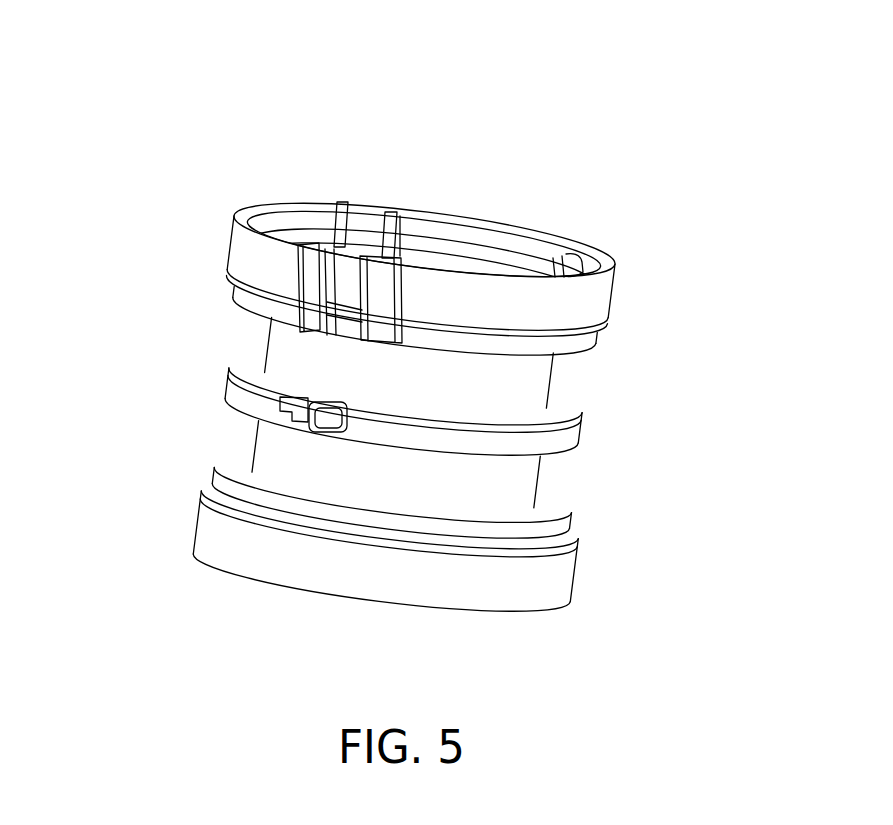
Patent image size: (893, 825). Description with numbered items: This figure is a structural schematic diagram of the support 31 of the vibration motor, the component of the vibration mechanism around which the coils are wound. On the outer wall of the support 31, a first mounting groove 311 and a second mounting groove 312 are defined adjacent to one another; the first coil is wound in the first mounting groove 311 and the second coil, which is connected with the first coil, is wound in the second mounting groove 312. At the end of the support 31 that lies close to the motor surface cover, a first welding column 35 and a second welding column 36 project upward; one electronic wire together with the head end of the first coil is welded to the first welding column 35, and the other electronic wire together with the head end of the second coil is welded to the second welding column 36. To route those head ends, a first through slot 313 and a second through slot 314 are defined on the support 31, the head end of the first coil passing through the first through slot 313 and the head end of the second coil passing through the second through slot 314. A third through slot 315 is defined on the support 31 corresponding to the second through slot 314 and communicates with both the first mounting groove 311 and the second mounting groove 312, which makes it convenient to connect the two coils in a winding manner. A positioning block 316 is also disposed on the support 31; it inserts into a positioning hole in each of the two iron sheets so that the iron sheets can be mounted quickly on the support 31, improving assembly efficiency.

The support 31 is at (243, 250).
The first mounting groove 311 is at (513, 390).
The second mounting groove 312 is at (445, 487).
The first through slot 313 is at (383, 284).
The second through slot 314 is at (320, 297).
The third through slot 315 is at (300, 413).
The positioning block 316 is at (328, 420).
The first welding column 35 is at (393, 215).
The second welding column 36 is at (337, 208).